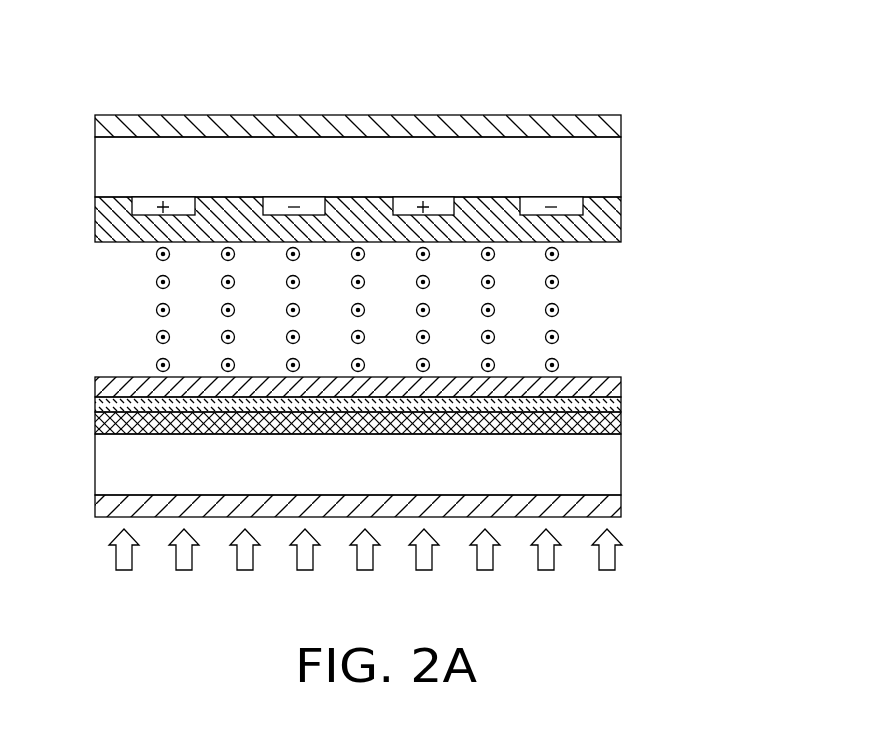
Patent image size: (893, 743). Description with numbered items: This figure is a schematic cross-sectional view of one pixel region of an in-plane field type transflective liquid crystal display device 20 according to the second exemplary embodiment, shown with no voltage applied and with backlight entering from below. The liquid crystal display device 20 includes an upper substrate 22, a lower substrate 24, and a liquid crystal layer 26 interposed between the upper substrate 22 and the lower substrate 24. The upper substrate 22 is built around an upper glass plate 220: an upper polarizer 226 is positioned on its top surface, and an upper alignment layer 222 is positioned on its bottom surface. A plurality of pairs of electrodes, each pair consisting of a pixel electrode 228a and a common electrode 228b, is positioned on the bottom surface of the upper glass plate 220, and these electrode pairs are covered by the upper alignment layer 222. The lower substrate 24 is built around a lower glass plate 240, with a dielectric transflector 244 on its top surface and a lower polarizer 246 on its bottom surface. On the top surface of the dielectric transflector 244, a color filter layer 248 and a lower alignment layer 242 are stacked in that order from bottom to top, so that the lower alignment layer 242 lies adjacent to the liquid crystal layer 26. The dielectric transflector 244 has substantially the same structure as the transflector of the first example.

The liquid crystal display device 20 is at (84, 115).
The upper substrate 22 is at (713, 118).
The upper polarizer 226 is at (595, 132).
The upper glass plate 220 is at (598, 168).
The upper alignment layer 222 is at (598, 228).
The pixel electrode 228a is at (150, 207).
The common electrode 228b is at (279, 207).
The liquid crystal layer 26 is at (559, 310).
The lower substrate 24 is at (721, 370).
The lower alignment layer 242 is at (597, 386).
The color filter layer 248 is at (600, 403).
The dielectric transflector 244 is at (598, 428).
The lower glass plate 240 is at (600, 464).
The lower polarizer 246 is at (593, 503).